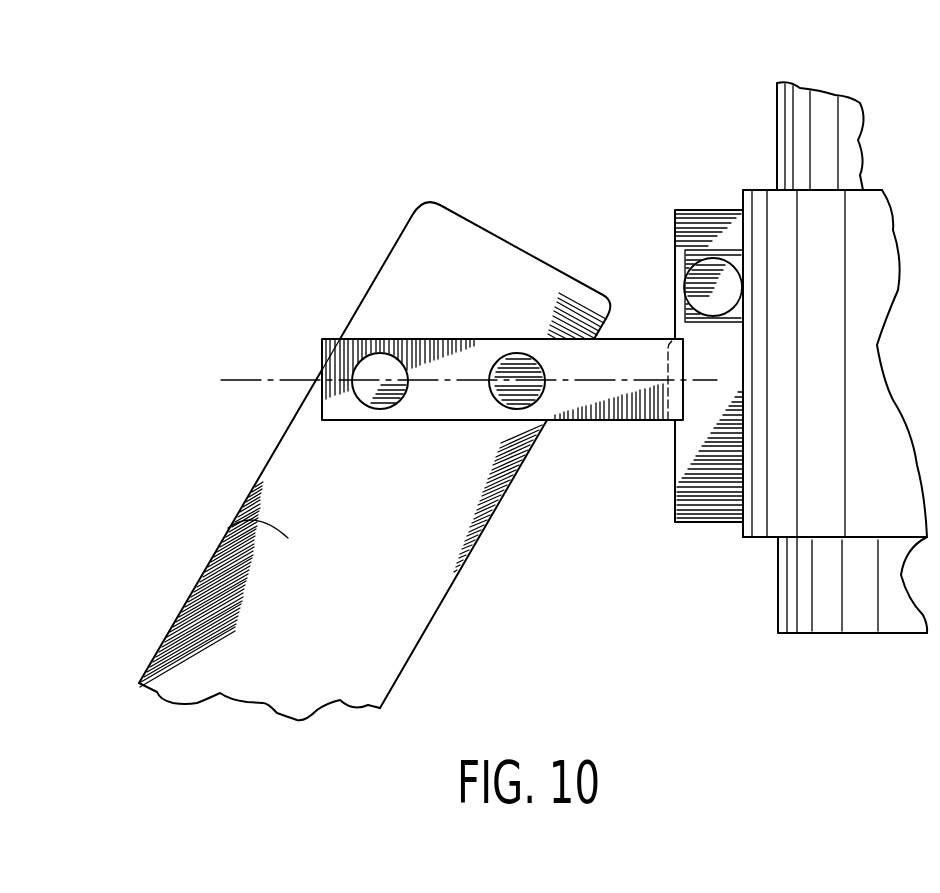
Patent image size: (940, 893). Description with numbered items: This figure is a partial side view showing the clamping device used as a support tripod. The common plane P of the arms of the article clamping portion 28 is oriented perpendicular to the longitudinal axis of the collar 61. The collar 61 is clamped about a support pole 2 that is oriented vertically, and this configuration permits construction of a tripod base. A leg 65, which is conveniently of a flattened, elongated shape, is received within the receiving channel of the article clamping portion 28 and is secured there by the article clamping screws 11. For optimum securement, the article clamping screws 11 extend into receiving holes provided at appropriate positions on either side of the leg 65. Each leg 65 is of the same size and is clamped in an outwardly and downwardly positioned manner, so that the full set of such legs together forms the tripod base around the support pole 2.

The support pole 2 is at (778, 132).
The article clamping screws 11 is at (383, 363).
The article clamping portion 28 is at (327, 338).
The collar 61 is at (833, 493).
The leg 65 is at (230, 528).
The common plane P is at (269, 378).